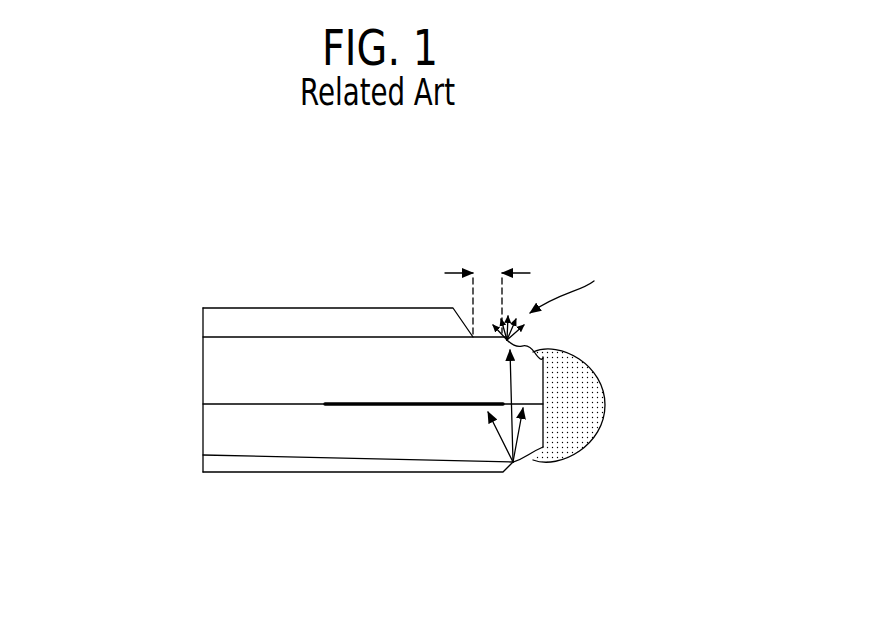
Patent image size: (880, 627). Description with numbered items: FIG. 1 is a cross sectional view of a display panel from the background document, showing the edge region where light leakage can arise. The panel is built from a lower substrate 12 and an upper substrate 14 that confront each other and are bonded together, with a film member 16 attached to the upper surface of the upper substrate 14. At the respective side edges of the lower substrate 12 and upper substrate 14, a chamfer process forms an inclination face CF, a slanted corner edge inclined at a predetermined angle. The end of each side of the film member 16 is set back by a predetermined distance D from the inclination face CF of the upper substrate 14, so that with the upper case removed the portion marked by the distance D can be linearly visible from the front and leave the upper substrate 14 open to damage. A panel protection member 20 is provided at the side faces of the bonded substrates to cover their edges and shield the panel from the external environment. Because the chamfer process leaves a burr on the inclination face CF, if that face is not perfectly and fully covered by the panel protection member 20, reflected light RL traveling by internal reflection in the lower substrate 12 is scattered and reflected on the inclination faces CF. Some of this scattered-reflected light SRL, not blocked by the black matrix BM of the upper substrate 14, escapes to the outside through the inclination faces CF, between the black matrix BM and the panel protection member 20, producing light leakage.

The lower substrate 12 is at (217, 437).
The upper substrate 14 is at (217, 385).
The film member 16 is at (217, 324).
The panel protection member 20 is at (592, 404).
The black matrix BM is at (405, 403).
The reflected light RL is at (422, 462).
The inclination face CF is at (520, 343).
The scattered-reflected light SRL is at (577, 283).
The predetermined distance D is at (487, 287).